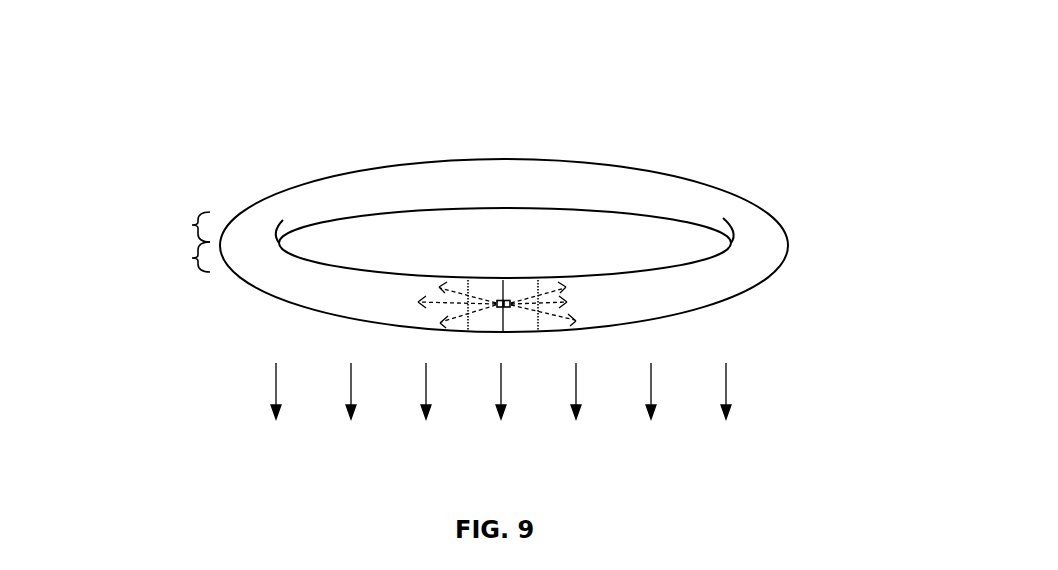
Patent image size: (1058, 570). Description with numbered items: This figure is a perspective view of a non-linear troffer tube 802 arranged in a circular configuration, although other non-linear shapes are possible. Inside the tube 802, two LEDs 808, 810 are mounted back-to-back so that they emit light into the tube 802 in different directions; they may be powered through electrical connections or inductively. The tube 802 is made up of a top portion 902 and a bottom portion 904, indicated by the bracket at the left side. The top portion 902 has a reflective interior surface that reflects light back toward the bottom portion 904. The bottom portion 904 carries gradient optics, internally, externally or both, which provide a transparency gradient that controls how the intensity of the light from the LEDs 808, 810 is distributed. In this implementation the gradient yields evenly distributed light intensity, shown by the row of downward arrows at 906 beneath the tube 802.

The non-linear tube 802 is at (755, 122).
The LED 808 is at (497, 302).
The LED 810 is at (508, 302).
The top portion 902 is at (190, 223).
The bottom portion 904 is at (190, 258).
The evenly distributed light intensity 906 is at (314, 444).